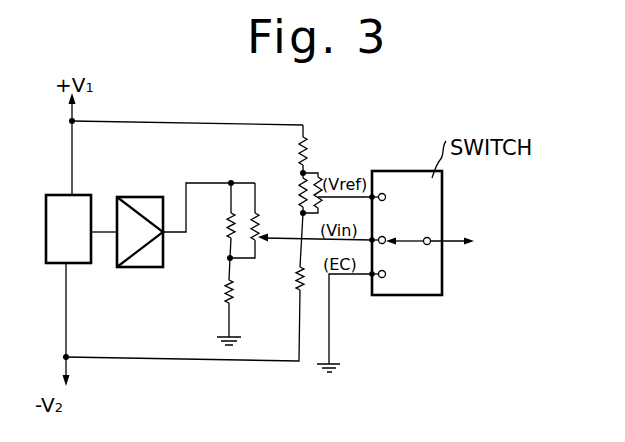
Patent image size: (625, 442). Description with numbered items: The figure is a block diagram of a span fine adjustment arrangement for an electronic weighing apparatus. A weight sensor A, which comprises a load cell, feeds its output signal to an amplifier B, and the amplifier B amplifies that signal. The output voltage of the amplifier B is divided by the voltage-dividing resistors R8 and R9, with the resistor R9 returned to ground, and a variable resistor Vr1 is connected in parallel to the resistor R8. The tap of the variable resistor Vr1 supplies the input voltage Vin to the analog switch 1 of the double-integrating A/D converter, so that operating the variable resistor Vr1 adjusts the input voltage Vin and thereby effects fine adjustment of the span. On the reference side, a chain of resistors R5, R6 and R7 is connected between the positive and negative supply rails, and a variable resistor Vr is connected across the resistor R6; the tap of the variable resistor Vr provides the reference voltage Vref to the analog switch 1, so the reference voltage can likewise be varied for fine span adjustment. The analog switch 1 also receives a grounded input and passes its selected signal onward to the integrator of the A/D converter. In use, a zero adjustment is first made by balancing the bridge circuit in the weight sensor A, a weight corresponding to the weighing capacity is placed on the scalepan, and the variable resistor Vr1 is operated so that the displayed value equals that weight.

The analog switch 1 is at (415, 290).
The weight sensor A is at (68, 229).
The amplifier B is at (140, 232).
The resistor R5 is at (287, 149).
The resistor R6 is at (287, 193).
The resistor R7 is at (283, 280).
The voltage-dividing resistor R8 is at (214, 220).
The voltage-dividing resistor R9 is at (213, 297).
The variable resistor Vr is at (323, 196).
The variable resistor Vr1 is at (257, 220).